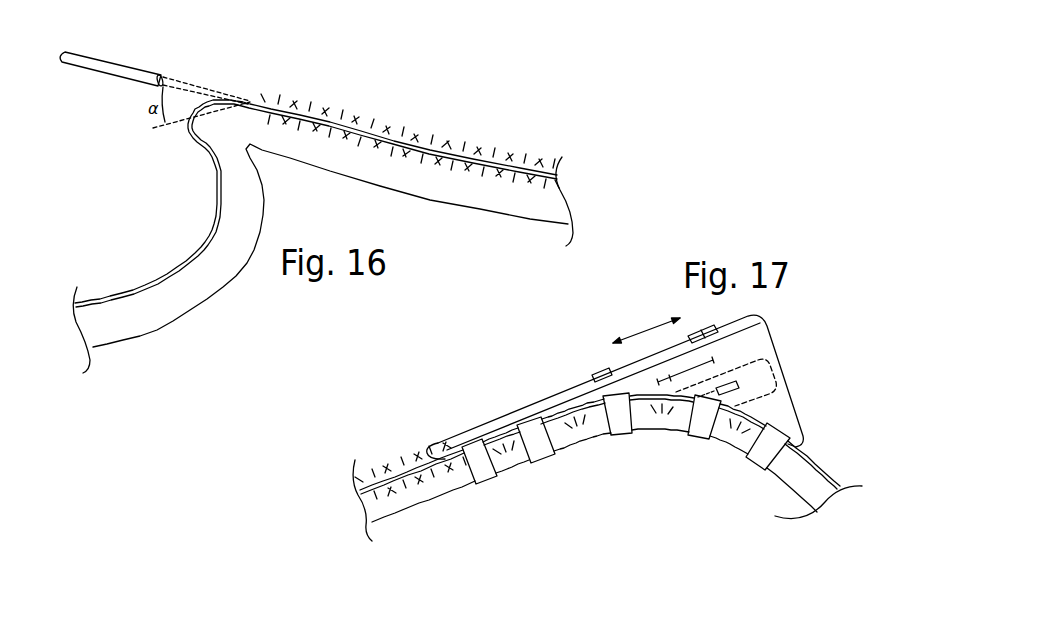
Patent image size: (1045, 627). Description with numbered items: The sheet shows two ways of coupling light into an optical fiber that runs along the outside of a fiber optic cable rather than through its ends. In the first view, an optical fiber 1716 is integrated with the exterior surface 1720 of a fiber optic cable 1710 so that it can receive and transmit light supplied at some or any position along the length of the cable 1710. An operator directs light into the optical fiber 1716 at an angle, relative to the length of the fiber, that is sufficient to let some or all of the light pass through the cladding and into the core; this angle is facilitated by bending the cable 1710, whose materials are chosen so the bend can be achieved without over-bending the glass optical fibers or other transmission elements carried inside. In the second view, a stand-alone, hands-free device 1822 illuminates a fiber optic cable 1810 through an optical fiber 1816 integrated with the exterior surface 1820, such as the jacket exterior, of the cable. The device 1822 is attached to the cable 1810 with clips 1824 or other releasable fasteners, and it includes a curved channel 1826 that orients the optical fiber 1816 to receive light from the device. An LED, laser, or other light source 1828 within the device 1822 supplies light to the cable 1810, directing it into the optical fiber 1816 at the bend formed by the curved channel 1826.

In FIG. 16, the fiber optic cable 1710 is at (380, 116).
In FIG. 16, the optical fiber 1716 is at (447, 151).
In FIG. 16, the exterior surface 1720 is at (410, 182).
In FIG. 17, the fiber optic cable 1810 is at (421, 497).
In FIG. 17, the optical fiber 1816 is at (393, 463).
In FIG. 17, the exterior surface 1820 is at (808, 472).
In FIG. 17, the stand-alone device 1822 is at (768, 340).
In FIG. 17, the clips 1824 is at (540, 450).
In FIG. 17, the curved channel 1826 is at (710, 451).
In FIG. 17, the light source 1828 is at (657, 362).